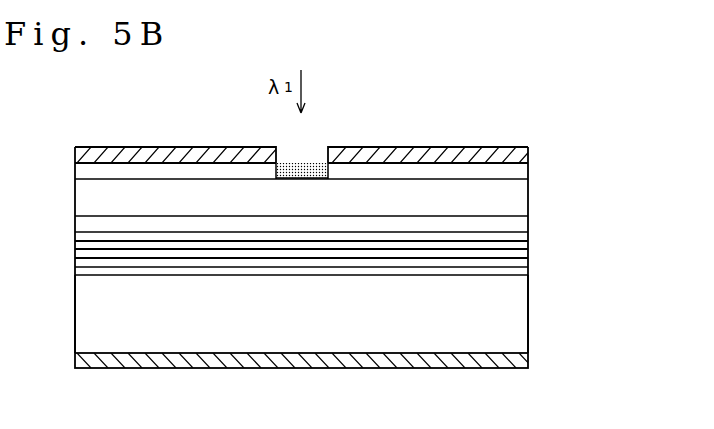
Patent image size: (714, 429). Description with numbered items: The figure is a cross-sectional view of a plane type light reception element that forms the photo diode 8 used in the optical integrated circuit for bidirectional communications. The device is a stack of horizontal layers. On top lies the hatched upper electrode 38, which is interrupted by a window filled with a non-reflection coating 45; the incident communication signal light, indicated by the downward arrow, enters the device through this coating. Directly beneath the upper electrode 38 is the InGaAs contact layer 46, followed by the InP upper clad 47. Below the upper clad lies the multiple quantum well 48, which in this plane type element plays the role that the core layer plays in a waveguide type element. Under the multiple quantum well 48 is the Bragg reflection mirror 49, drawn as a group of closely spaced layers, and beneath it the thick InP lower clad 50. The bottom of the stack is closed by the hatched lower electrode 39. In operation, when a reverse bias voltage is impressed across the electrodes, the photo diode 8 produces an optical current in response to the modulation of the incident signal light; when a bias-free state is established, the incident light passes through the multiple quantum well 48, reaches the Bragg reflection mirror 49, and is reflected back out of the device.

The photo diode 8 is at (604, 123).
The upper electrode 38 is at (482, 148).
The lower electrode 39 is at (522, 358).
The non-reflection coating 45 is at (300, 160).
The 1-InGaAs contact layer 46 is at (528, 172).
The InP upper clad 47 is at (522, 200).
The multiple quantum well 48 is at (538, 208).
The Bragg reflection mirror 49 is at (528, 260).
The InP lower clad 50 is at (519, 308).